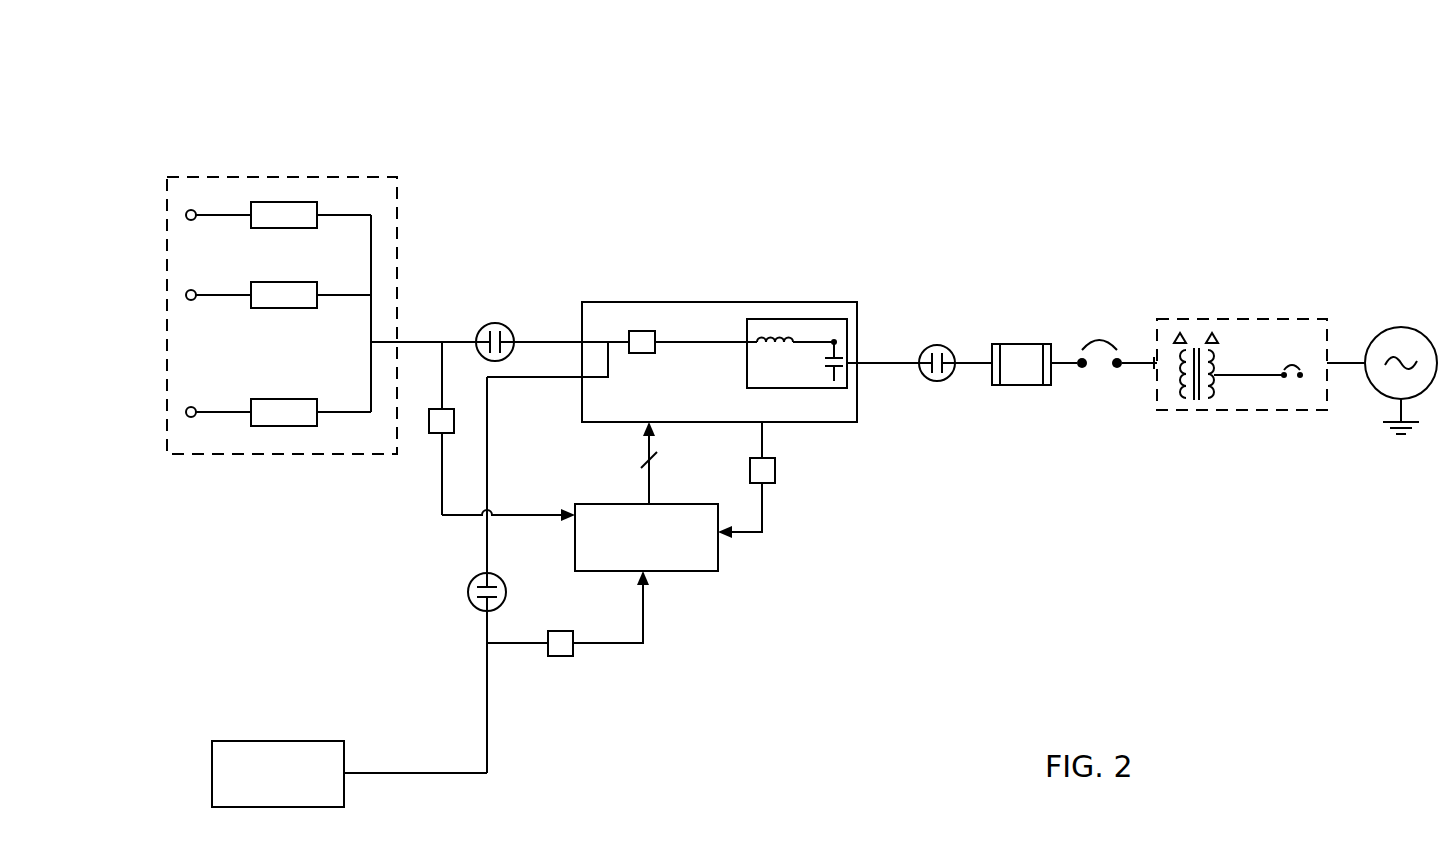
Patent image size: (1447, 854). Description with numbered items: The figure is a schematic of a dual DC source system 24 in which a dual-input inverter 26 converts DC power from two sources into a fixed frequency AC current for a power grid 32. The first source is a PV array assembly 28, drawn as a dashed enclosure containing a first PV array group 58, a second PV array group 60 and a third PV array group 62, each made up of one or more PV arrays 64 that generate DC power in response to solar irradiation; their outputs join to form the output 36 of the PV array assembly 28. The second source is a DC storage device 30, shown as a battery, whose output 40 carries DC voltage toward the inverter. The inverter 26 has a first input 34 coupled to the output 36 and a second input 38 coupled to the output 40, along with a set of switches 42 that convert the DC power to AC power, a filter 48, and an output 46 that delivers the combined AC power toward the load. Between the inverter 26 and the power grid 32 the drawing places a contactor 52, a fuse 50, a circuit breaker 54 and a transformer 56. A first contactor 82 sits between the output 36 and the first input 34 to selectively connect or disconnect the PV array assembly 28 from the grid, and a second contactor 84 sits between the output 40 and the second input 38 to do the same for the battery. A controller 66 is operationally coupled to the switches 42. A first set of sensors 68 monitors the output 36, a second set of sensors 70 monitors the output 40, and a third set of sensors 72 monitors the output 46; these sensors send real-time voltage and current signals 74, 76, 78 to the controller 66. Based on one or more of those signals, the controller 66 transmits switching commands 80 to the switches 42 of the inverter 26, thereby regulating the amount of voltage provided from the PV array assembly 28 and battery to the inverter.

The dual DC source system 24 is at (1335, 108).
The dual-input inverter 26 is at (598, 302).
The PV array assembly 28 is at (232, 177).
The DC storage device 30 is at (240, 741).
The power grid 32 is at (1390, 328).
The first input 34 is at (580, 340).
The output of PV array assembly 36 is at (398, 342).
The second input 38 is at (580, 378).
The output of battery source 40 is at (347, 770).
The set of switches 42 is at (645, 331).
The output of inverter 46 is at (855, 363).
The filter 48 is at (770, 388).
The fuse 50 is at (1020, 344).
The contactor 52 is at (937, 345).
The circuit breaker 54 is at (1099, 337).
The transformer 56 is at (1227, 319).
The first PV array group 58 is at (200, 218).
The second PV array group 60 is at (200, 298).
The third PV array group 62 is at (200, 415).
The PV array 64 is at (277, 228).
The controller 66 is at (596, 504).
The first set of sensors 68 is at (445, 433).
The second set of sensors 70 is at (560, 656).
The third set of sensors 72 is at (775, 465).
The real-time voltage and current signals 74 is at (518, 515).
The real-time voltage and current signals 76 is at (645, 610).
The real-time voltage and current signals 78 is at (763, 498).
The switching commands 80 is at (650, 478).
The first contactor 82 is at (493, 323).
The second contactor 84 is at (506, 592).